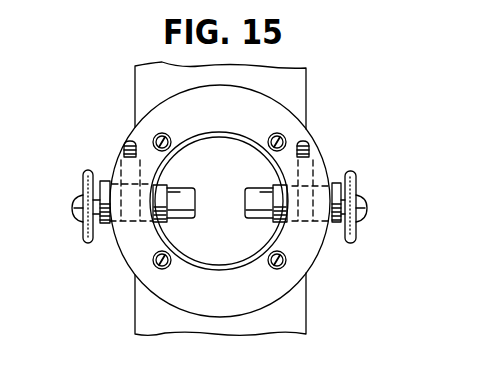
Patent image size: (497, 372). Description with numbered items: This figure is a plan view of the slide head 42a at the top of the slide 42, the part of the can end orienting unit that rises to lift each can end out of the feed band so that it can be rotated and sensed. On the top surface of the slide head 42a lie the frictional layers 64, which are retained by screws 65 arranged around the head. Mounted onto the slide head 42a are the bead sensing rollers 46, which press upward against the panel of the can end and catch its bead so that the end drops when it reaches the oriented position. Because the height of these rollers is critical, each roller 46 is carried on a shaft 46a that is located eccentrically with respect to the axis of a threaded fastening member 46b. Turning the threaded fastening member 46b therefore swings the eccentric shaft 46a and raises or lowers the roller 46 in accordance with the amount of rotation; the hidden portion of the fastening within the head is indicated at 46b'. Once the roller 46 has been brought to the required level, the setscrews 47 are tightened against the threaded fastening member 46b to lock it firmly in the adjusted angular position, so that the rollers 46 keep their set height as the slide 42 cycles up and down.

The slide 42 is at (290, 313).
The slide head 42a is at (312, 254).
The frictional layers 64 is at (282, 116).
The screws 65 is at (165, 267).
The bead sensing rollers 46 is at (88, 236).
The shaft 46a is at (78, 208).
The threaded fastening member 46b is at (220, 186).
The hidden bolt portions 46b' is at (197, 229).
The setscrews 47 is at (125, 147).